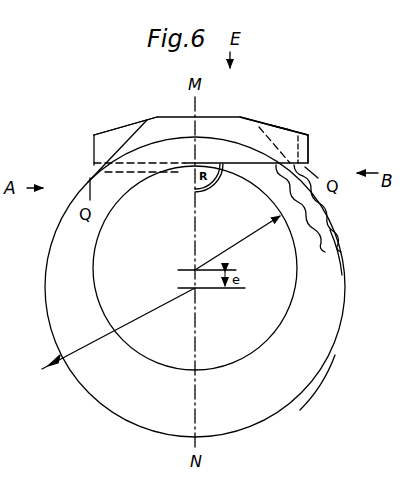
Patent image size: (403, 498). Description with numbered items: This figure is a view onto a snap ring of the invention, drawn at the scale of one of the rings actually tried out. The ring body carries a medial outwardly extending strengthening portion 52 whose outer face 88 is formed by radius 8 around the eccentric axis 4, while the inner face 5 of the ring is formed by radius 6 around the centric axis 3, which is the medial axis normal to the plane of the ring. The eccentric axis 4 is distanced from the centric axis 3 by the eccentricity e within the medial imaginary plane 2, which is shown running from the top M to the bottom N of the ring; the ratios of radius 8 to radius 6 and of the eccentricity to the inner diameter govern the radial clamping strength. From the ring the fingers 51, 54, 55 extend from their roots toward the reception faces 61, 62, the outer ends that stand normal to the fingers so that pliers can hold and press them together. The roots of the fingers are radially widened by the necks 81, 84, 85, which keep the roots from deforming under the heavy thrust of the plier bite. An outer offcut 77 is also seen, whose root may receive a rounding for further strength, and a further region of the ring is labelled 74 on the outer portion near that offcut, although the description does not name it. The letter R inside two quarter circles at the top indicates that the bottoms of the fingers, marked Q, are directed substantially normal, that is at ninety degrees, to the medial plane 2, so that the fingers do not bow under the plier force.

The medial imaginary plane 2 is at (192, 170).
The centric axis 3 is at (192, 267).
The eccentric axis 4 is at (199, 292).
The inner face 5 is at (96, 266).
The radius of inner face 6 is at (234, 243).
The radius of outer face 8 is at (118, 328).
The finger 51 is at (111, 139).
The medial outwardly extending strengthening portion 52 is at (245, 420).
The finger 54 is at (281, 132).
The finger 55 is at (294, 113).
The reception face 61 is at (93, 147).
The reception face 62 is at (309, 144).
The outer ring surface 74 is at (338, 251).
The outer offcut 77 is at (333, 219).
The neck 81 is at (259, 127).
The neck 84 is at (136, 128).
The neck 85 is at (125, 100).
The outer face 88 is at (313, 376).